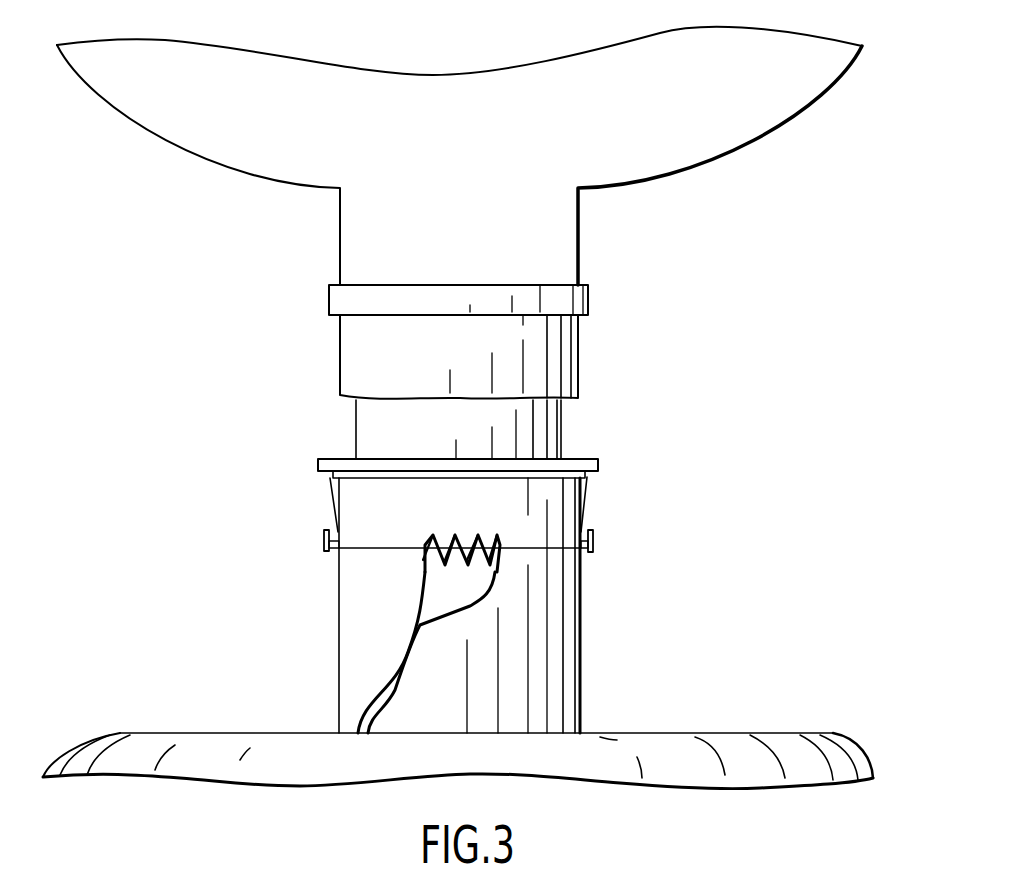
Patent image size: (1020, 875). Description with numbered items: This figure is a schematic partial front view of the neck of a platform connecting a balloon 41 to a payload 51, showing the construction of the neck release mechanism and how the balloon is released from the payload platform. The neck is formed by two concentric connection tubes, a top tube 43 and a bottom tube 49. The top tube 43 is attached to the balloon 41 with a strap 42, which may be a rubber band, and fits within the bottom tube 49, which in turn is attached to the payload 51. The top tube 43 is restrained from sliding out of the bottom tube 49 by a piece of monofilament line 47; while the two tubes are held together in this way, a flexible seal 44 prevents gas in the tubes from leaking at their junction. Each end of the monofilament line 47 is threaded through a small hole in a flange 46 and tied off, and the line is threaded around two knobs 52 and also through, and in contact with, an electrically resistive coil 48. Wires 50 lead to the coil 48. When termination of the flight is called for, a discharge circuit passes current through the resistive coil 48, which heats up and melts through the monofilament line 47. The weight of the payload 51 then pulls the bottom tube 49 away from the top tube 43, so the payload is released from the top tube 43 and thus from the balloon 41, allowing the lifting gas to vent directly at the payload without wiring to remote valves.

The balloon 41 is at (560, 241).
The strap 42 is at (587, 299).
The top tube 43 is at (562, 427).
The flexible seal 44 is at (352, 470).
The flange 46 is at (584, 453).
The monofilament line 47 is at (590, 498).
The electrically resistive coil 48 is at (428, 535).
The bottom tube 49 is at (347, 597).
The wires 50 is at (407, 654).
The payload 51 is at (258, 748).
The knobs 52 is at (325, 535).